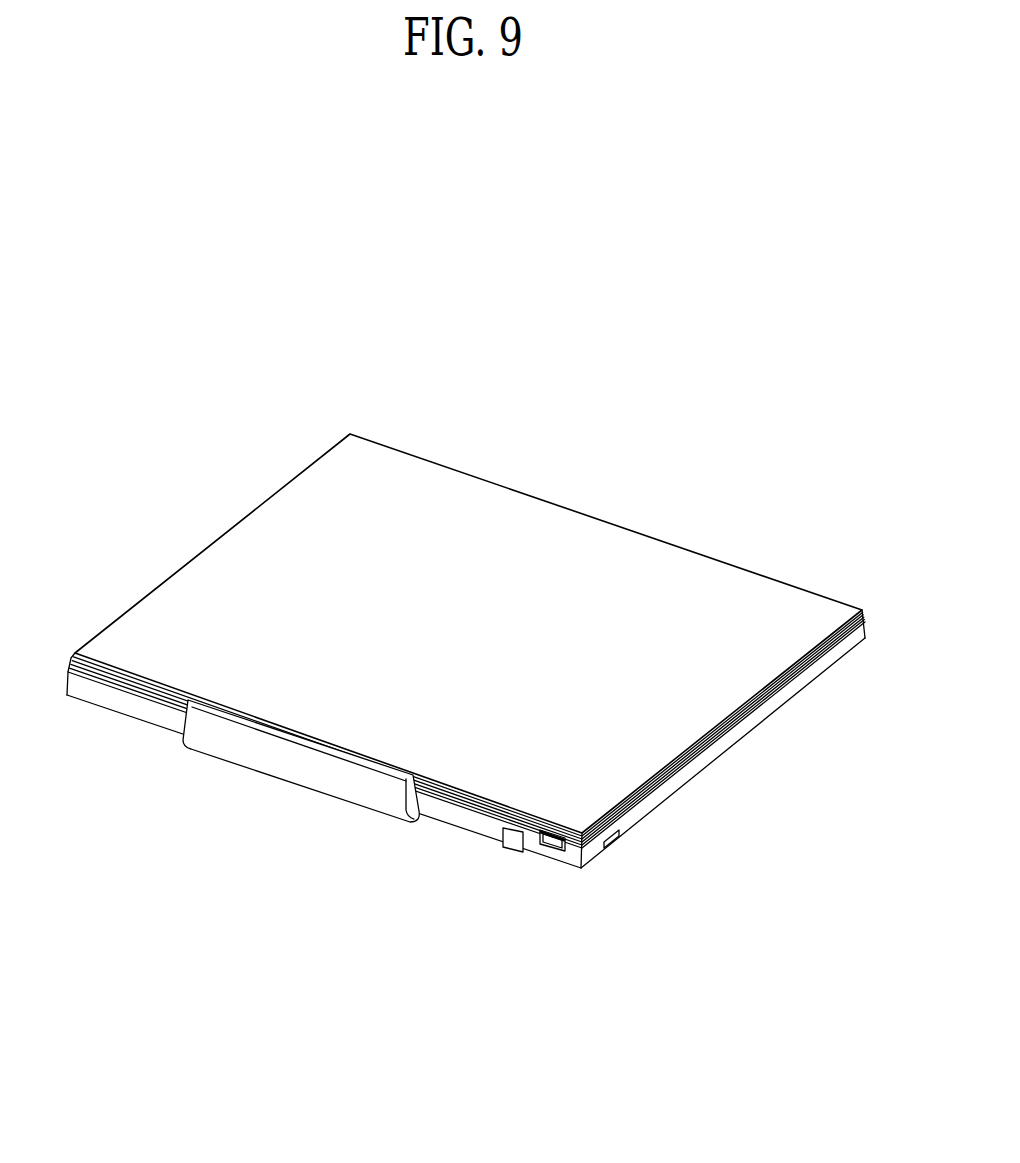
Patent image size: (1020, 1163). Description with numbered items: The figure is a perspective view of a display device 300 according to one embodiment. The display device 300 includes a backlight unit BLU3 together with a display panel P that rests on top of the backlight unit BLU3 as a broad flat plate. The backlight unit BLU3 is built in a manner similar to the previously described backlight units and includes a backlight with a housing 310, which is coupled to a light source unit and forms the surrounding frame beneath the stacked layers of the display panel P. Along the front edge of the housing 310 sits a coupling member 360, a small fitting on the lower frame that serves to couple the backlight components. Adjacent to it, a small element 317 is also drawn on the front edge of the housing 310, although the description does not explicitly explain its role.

The display device 300 is at (308, 371).
The display panel P is at (615, 578).
The backlight unit BLU3 is at (598, 887).
The housing 310 is at (605, 847).
The coupling member 360 is at (512, 840).
The connector 317 is at (550, 840).